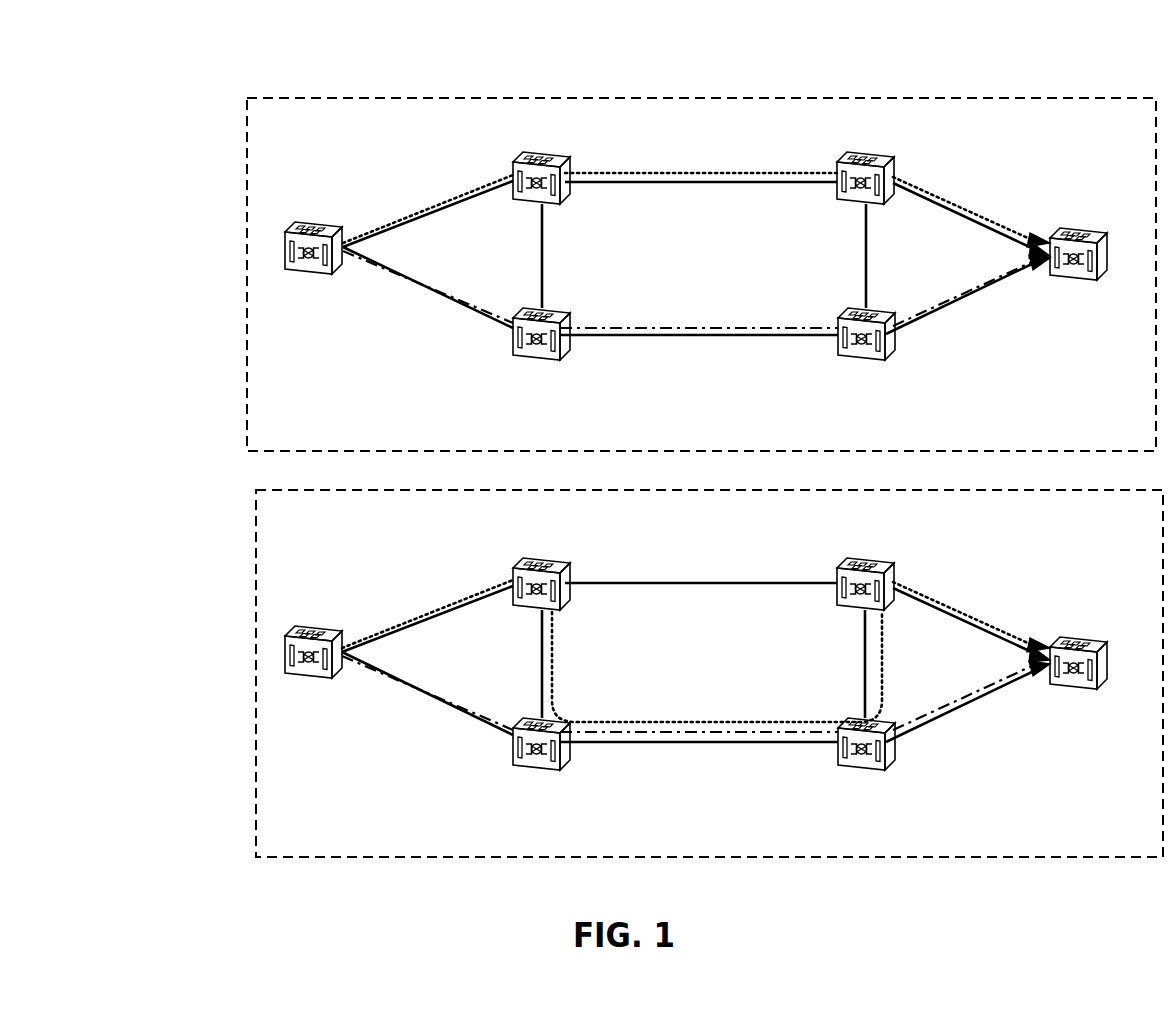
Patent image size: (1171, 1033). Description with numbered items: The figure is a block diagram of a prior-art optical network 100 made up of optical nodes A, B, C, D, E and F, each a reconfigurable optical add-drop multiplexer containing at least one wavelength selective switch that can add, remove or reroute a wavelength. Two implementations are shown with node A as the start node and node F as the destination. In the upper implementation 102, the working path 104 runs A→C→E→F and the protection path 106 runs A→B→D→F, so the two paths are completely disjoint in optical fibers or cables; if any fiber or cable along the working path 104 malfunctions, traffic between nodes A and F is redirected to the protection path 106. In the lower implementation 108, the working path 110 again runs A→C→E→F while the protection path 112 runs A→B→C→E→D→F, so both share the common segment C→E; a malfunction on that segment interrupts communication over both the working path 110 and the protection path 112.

The optical network 100 is at (80, 54).
The implementation 102 is at (248, 155).
The working path 104 is at (685, 331).
The protection path 106 is at (685, 176).
The implementation 108 is at (254, 562).
The working path 110 is at (635, 736).
The protection path 112 is at (670, 725).